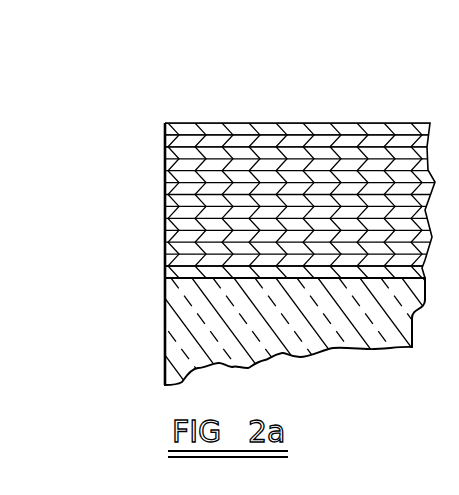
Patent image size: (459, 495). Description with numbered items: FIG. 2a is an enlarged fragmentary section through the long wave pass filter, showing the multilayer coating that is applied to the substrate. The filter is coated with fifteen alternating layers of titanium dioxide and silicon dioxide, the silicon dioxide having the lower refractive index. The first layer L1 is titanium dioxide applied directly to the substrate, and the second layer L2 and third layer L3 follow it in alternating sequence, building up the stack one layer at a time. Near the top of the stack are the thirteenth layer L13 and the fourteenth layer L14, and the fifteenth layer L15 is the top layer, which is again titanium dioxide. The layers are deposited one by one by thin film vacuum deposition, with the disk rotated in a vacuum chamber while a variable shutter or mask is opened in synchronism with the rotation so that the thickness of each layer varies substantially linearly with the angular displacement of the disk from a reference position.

The top layer L15 is at (164, 130).
The fourteenth layer L14 is at (164, 134).
The thirteenth layer L13 is at (164, 147).
The third layer L3 is at (164, 255).
The second layer L2 is at (164, 267).
The first layer L1 is at (164, 278).